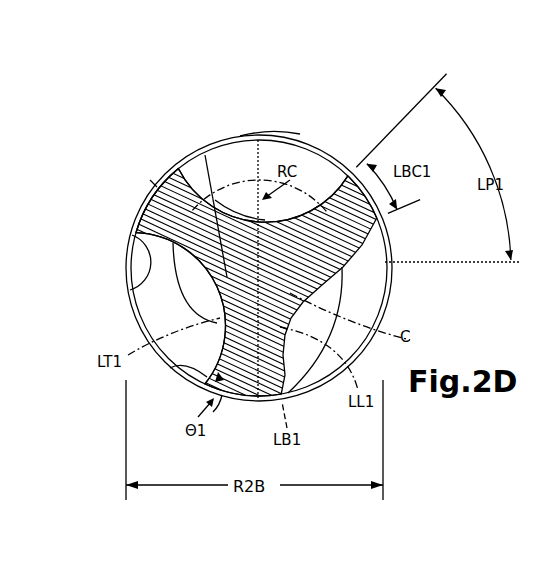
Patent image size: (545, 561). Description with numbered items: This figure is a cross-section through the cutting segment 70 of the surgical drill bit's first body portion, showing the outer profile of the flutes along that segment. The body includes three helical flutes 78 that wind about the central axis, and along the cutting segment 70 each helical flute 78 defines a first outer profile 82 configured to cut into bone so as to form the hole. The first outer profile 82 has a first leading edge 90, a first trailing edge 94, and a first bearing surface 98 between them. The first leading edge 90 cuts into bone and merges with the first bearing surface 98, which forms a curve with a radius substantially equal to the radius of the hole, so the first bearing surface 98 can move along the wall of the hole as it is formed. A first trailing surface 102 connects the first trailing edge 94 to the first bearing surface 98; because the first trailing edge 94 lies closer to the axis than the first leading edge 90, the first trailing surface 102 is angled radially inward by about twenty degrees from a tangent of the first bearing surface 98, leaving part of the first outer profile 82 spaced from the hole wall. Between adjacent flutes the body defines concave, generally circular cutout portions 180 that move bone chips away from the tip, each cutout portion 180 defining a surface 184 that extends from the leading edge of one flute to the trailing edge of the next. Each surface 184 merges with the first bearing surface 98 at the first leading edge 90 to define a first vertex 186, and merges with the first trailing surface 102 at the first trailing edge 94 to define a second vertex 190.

The cutting segment 70 is at (157, 139).
The first outer profile 82 is at (136, 188).
The helical flute 78 is at (310, 237).
The first bearing surface 98 is at (142, 210).
The first trailing surface 102 is at (157, 187).
The first trailing edge 94 is at (196, 167).
The surface 184 is at (244, 170).
The cutout portion 180 is at (278, 134).
The first leading edge 90 is at (132, 236).
The first vertex 186 is at (138, 278).
The second vertex 190 is at (172, 368).